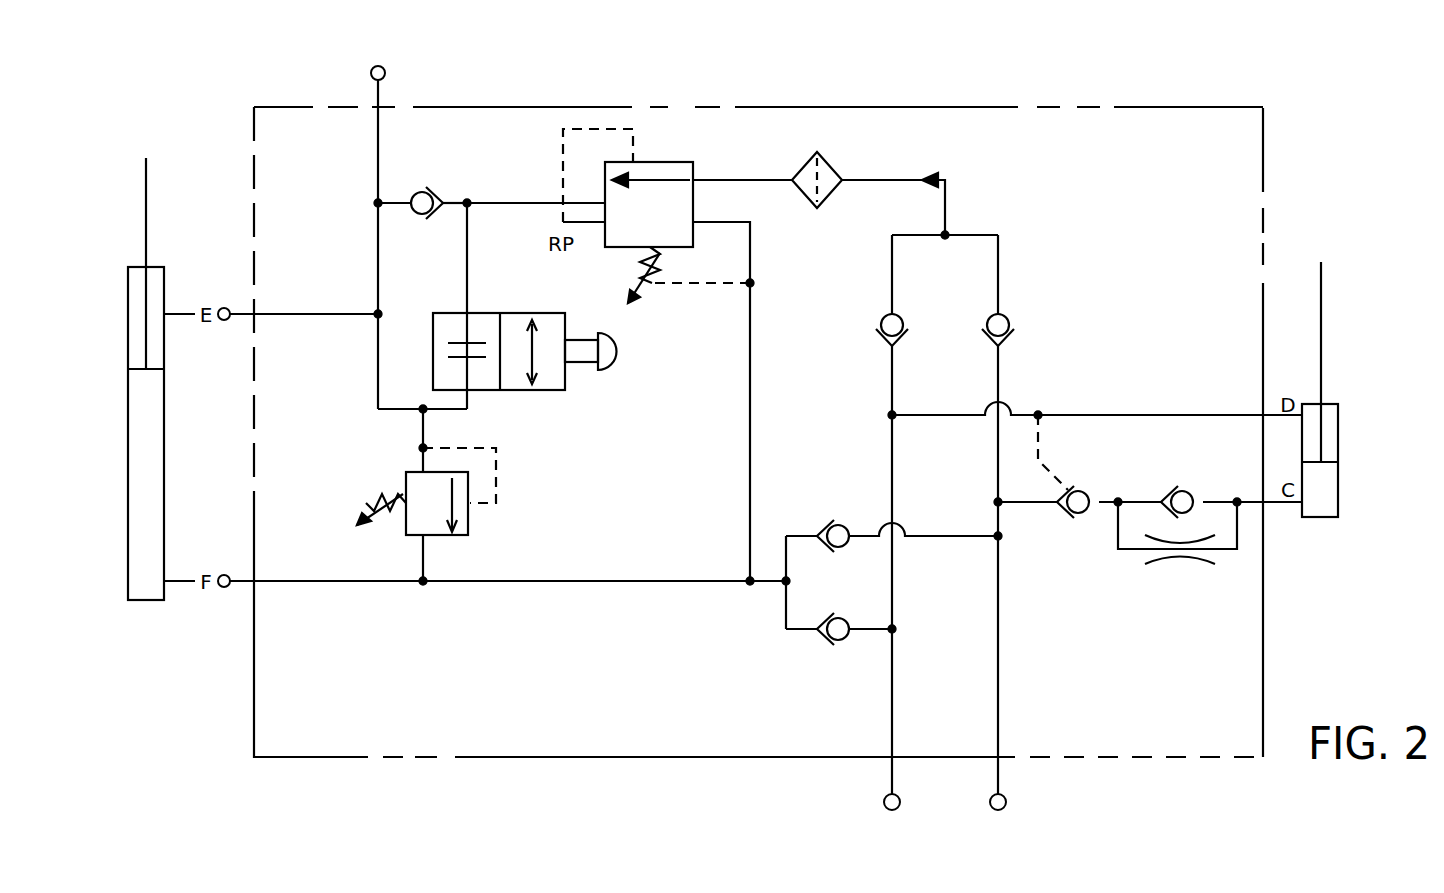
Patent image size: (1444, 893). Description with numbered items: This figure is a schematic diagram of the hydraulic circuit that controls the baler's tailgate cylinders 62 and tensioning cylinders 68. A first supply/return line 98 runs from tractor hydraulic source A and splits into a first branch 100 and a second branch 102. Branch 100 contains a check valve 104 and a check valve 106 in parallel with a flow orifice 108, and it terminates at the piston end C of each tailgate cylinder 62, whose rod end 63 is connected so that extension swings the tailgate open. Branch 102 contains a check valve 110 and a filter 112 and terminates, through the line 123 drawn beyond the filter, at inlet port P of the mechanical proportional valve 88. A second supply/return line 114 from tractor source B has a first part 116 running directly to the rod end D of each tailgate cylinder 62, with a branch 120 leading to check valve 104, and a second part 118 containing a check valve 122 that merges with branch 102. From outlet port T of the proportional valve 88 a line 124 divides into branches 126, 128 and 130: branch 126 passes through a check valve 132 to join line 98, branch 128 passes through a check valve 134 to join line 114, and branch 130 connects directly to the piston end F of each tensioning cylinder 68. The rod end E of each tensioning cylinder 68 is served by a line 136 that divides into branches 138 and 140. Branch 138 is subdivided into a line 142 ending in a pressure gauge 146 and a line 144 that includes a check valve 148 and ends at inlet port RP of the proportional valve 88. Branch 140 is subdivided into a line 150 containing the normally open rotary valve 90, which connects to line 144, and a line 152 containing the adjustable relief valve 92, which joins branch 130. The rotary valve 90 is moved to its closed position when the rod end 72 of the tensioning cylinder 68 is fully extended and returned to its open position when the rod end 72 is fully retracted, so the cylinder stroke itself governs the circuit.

The tailgate cylinder 62 is at (1335, 488).
The rod end 63 is at (1323, 383).
The tensioning cylinder 68 is at (137, 447).
The rod end 72 is at (147, 342).
The proportional valve 88 is at (662, 168).
The rotary valve 90 is at (568, 316).
The adjustable relief valve 92 is at (470, 526).
The first supply/return line 98 is at (1002, 680).
The first branch 100 is at (1103, 490).
The second branch 102 is at (1002, 380).
The check valve 104 is at (1068, 490).
The check valve 106 is at (1172, 490).
The flow orifice 108 is at (1200, 560).
The check valve 110 is at (1010, 333).
The filter 112 is at (840, 174).
The second supply/return line 114 is at (897, 662).
The first part 116 is at (1162, 411).
The second part 118 is at (895, 292).
The branch 120 is at (1036, 461).
The check valve 122 is at (880, 337).
The pressure line 123 is at (775, 178).
The line 124 is at (755, 426).
The branch 126 is at (865, 524).
The branch 128 is at (877, 634).
The branch 130 is at (621, 583).
The check valve 132 is at (830, 524).
The check valve 134 is at (830, 619).
The line 136 is at (340, 306).
The branch 138 is at (381, 292).
The branch 140 is at (378, 373).
The line 142 is at (380, 136).
The line 144 is at (467, 196).
The pressure gauge 146 is at (388, 70).
The check valve 148 is at (433, 193).
The line 150 is at (467, 398).
The line 152 is at (421, 448).